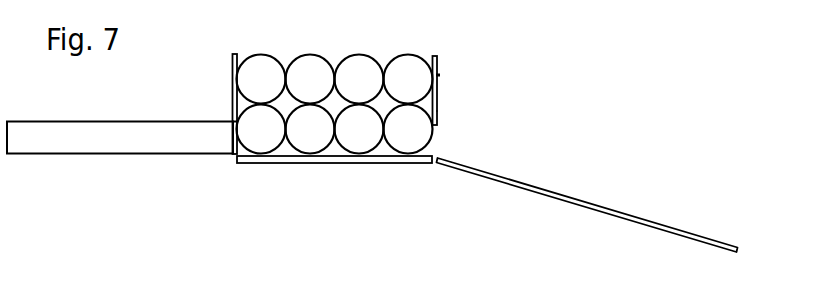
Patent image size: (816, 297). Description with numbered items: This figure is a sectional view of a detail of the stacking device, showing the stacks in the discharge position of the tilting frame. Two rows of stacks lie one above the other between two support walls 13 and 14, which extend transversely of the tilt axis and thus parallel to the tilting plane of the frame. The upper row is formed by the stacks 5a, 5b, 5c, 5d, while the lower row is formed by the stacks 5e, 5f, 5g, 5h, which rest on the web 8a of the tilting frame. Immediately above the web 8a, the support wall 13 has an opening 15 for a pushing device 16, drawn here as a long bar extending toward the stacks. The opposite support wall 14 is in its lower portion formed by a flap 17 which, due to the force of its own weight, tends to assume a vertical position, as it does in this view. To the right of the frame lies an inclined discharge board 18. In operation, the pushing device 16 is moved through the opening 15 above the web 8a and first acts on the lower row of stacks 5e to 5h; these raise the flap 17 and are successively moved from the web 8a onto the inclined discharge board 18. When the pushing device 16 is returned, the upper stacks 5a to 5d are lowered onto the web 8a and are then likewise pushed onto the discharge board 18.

The stack 5a is at (413, 77).
The stack 5b is at (363, 72).
The stack 5c is at (314, 70).
The stack 5d is at (265, 68).
The stack 5e is at (405, 143).
The stack 5f is at (358, 137).
The stack 5g is at (312, 140).
The stack 5h is at (260, 140).
The web 8a is at (278, 164).
The support wall 13 is at (231, 64).
The support wall 14 is at (437, 63).
The opening 15 is at (231, 121).
The pushing device 16 is at (183, 137).
The flap 17 is at (437, 110).
The inclined discharge board 18 is at (557, 192).